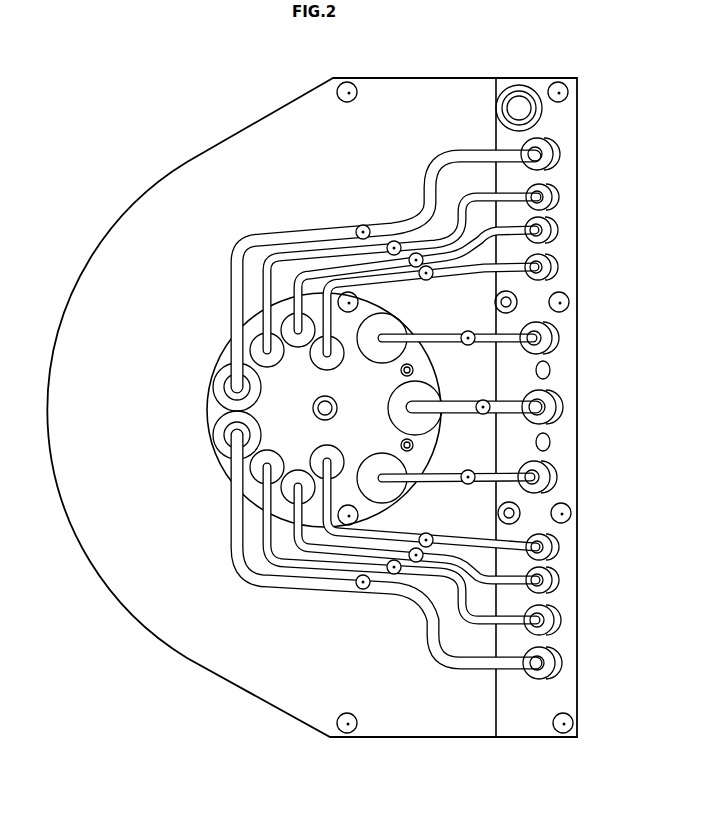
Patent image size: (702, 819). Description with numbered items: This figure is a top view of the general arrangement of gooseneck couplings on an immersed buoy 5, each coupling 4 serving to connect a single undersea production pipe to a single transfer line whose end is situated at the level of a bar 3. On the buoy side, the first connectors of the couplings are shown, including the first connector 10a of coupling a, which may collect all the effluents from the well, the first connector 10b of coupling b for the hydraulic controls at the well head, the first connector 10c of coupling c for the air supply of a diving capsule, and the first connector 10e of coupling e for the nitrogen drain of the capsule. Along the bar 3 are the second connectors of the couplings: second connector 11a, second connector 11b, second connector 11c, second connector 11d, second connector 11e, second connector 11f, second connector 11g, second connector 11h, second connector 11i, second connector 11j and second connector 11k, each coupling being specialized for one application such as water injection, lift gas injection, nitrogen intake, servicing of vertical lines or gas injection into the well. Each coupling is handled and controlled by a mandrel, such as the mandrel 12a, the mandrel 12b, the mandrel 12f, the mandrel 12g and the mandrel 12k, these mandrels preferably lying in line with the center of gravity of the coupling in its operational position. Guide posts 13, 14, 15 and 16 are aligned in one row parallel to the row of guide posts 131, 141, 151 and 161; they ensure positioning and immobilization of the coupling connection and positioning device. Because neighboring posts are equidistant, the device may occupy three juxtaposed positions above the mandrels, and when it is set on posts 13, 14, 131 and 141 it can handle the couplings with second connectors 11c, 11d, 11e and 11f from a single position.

The bar 3 is at (515, 75).
The coupling 4 is at (320, 595).
The immersed buoy 5 is at (132, 616).
The first connector of coupling a 10a is at (400, 409).
The first connector of coupling b 10b is at (382, 362).
The first connector of coupling c 10c is at (320, 367).
The first connector of coupling e 10e is at (299, 348).
The second connector of coupling a 11a is at (552, 404).
The second connector of coupling b 11b is at (548, 338).
The second connector of coupling c 11c is at (548, 267).
The second connector of coupling d 11d is at (548, 230).
The second connector of coupling e 11e is at (549, 197).
The second connector of coupling f 11f is at (549, 153).
The second connector of coupling g 11g is at (547, 475).
The second connector of coupling h 11h is at (549, 549).
The second connector of coupling i 11i is at (549, 582).
The second connector of coupling j 11j is at (550, 620).
The second connector of coupling k 11k is at (550, 663).
The mandrel 12a is at (476, 405).
The mandrel 12b is at (468, 331).
The mandrel 12f is at (363, 225).
The mandrel 12g is at (468, 484).
The mandrel 12k is at (362, 590).
The guide post 13 is at (347, 81).
The guide post 131 is at (558, 81).
The guide post 14 is at (359, 299).
The guide post 141 is at (569, 302).
The guide post 15 is at (358, 514).
The guide post 151 is at (571, 513).
The guide post 16 is at (348, 735).
The guide post 161 is at (556, 735).